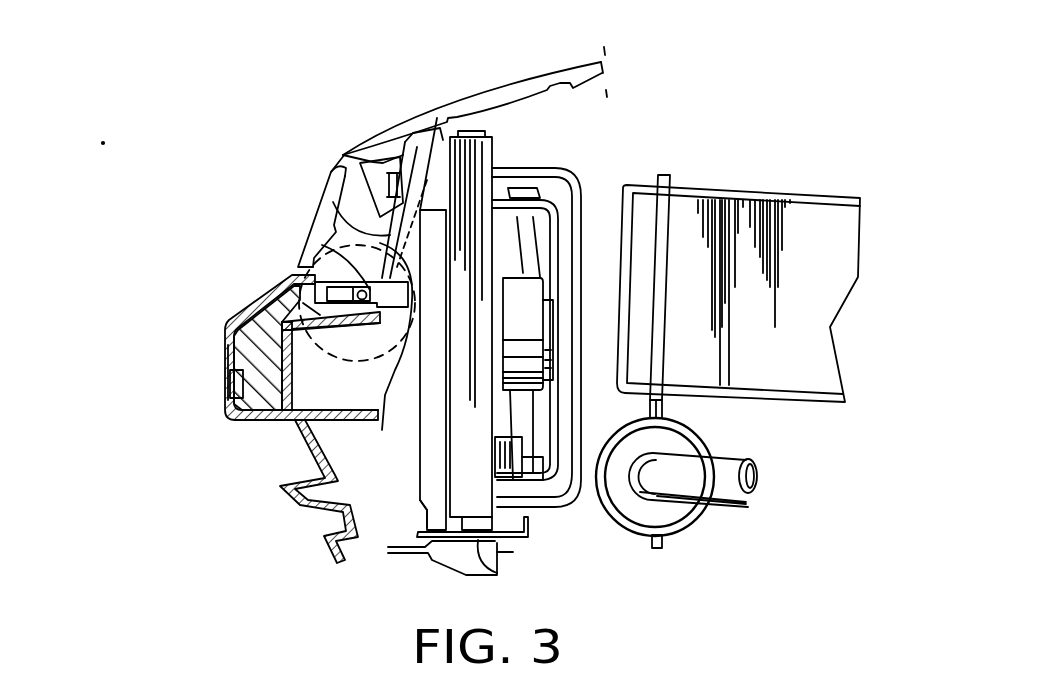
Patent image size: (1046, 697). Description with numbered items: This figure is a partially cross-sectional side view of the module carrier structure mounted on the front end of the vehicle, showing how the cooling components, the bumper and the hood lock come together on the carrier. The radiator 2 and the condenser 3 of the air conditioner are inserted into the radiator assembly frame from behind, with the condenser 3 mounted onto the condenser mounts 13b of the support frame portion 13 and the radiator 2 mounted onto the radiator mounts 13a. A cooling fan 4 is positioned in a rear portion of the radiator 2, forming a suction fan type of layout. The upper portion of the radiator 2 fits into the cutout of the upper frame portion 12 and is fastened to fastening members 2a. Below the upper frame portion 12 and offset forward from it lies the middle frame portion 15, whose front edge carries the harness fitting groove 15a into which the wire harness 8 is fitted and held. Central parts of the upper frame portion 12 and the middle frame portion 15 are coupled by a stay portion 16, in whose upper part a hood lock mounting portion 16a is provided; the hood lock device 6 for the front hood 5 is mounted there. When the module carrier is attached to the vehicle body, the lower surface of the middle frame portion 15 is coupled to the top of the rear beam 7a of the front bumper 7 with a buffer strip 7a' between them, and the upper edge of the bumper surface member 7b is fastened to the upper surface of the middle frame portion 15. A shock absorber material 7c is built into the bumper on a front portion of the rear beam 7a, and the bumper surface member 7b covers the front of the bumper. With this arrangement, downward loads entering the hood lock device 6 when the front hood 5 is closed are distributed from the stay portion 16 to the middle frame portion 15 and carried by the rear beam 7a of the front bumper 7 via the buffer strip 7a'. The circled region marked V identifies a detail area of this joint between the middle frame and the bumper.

The radiator 2 is at (488, 150).
The fastening members 2a is at (440, 137).
The condenser 3 is at (432, 460).
The cooling fan 4 is at (530, 240).
The front hood 5 is at (530, 73).
The hood lock device 6 is at (352, 208).
The front bumper 7 is at (215, 381).
The rear beam 7a is at (286, 424).
The buffer strip 7a' is at (353, 385).
The bumper surface member 7b is at (255, 305).
The shock absorber material 7c is at (223, 355).
The wire harness 8 is at (336, 366).
The upper frame portion 12 is at (414, 120).
The support frame portion 13 is at (527, 533).
The radiator mounts 13a is at (497, 560).
The condenser mounts 13b is at (420, 513).
The middle frame portion 15 is at (310, 242).
The harness fitting groove 15a is at (250, 333).
The stay portion 16 is at (322, 207).
The hood lock mounting portion 16a is at (380, 197).
The detail region V is at (357, 324).